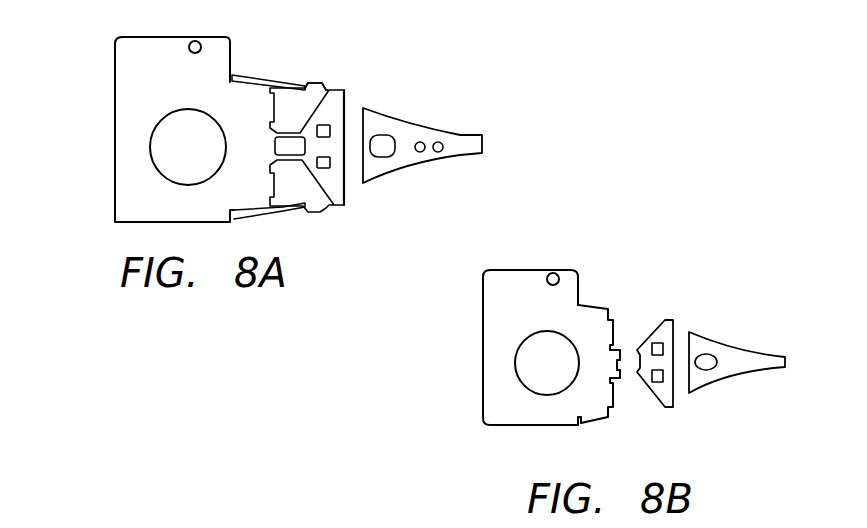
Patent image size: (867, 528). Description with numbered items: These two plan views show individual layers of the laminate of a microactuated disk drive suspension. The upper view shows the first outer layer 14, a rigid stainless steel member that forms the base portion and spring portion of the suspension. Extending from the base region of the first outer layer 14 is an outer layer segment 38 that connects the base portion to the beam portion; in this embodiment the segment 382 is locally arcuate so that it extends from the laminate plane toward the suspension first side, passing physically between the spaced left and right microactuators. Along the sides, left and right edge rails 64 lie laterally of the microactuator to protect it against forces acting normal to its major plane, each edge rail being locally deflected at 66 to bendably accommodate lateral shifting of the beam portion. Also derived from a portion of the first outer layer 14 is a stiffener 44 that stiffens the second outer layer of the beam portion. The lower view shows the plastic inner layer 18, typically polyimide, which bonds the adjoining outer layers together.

In FIG. 8A, the first outer layer 14 is at (93, 33).
In FIG. 8B, the inner layer 18 is at (472, 270).
In FIG. 8A, the edge rail 64 is at (245, 77).
In FIG. 8A, the local deflection of edge rail 66 is at (320, 83).
In FIG. 8A, the first outer layer segment 382 is at (301, 128).
In FIG. 8A, the outer layer segment 38 is at (305, 188).
In FIG. 8A, the stiffener 44 is at (460, 143).